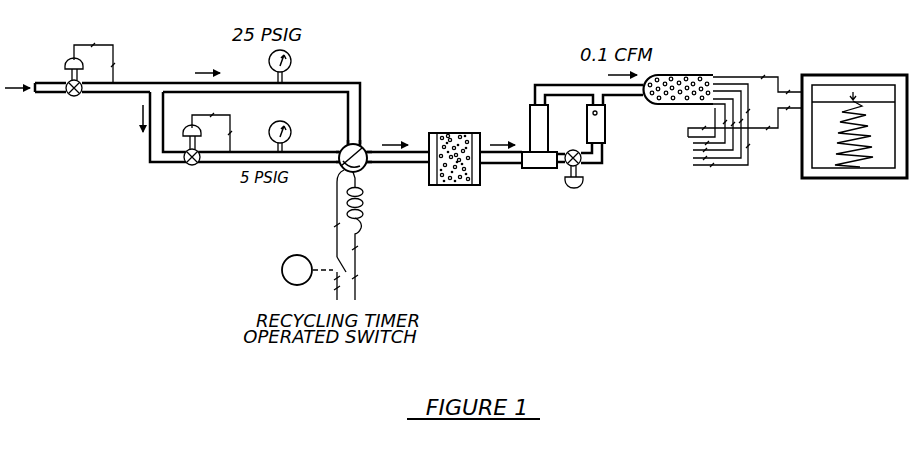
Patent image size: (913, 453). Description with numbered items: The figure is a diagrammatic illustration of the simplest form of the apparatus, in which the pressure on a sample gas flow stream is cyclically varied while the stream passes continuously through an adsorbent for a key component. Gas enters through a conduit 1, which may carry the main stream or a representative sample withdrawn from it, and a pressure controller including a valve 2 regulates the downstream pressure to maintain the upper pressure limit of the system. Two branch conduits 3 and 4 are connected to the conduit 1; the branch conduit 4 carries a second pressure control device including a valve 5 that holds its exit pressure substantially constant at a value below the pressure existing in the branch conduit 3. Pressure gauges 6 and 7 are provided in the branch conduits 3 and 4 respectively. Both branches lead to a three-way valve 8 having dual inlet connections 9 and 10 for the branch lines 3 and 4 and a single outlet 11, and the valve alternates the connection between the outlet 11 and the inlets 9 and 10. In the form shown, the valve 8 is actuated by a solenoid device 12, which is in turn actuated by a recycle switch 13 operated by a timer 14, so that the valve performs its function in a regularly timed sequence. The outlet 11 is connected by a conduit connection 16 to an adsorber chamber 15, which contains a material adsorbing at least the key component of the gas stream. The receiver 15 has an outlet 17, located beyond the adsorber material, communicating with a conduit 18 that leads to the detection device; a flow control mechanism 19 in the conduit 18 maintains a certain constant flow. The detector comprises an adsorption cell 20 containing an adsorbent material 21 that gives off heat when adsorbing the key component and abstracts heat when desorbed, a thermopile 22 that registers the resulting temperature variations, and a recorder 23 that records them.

The conduit 1 is at (46, 83).
The valve 2 is at (70, 98).
The branch conduit 3 is at (234, 83).
The branch conduit 4 is at (150, 157).
The valve 5 is at (189, 167).
The pressure gauge 6 is at (291, 63).
The pressure gauge 7 is at (291, 133).
The three-way valve 8 is at (341, 148).
The inlet connection 9 is at (360, 146).
The inlet connection 10 is at (340, 166).
The outlet 11 is at (366, 167).
The solenoid device 12 is at (364, 210).
The recycle switch 13 is at (336, 263).
The timer 14 is at (289, 260).
The adsorber chamber 15 is at (451, 133).
The conduit connection 16 is at (405, 163).
The outlet 17 is at (490, 164).
The conduit 18 is at (561, 86).
The flow control mechanism 19 is at (536, 169).
The adsorption cell 20 is at (672, 76).
The adsorbent material 21 is at (667, 105).
The thermopile 22 is at (737, 80).
The recorder 23 is at (845, 77).